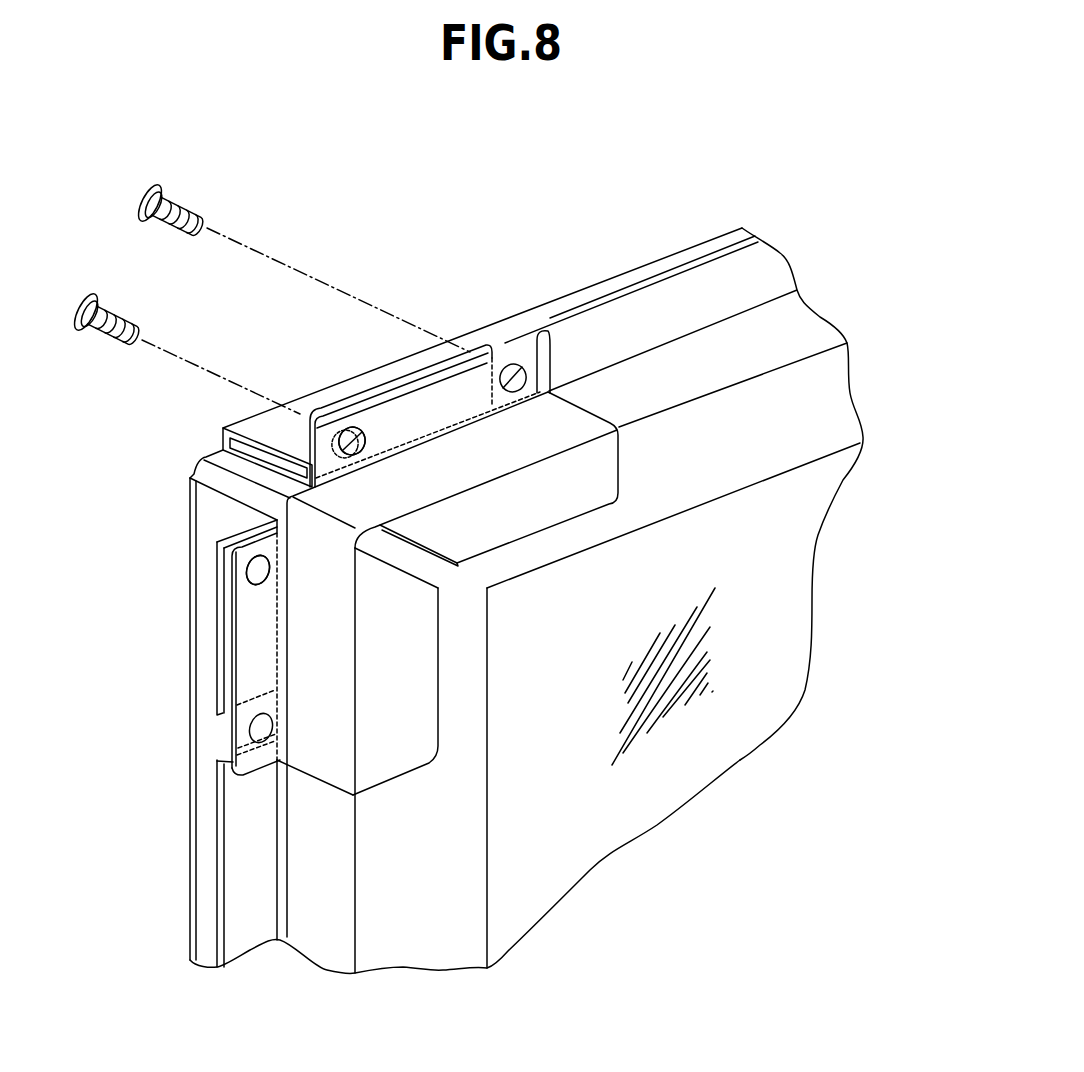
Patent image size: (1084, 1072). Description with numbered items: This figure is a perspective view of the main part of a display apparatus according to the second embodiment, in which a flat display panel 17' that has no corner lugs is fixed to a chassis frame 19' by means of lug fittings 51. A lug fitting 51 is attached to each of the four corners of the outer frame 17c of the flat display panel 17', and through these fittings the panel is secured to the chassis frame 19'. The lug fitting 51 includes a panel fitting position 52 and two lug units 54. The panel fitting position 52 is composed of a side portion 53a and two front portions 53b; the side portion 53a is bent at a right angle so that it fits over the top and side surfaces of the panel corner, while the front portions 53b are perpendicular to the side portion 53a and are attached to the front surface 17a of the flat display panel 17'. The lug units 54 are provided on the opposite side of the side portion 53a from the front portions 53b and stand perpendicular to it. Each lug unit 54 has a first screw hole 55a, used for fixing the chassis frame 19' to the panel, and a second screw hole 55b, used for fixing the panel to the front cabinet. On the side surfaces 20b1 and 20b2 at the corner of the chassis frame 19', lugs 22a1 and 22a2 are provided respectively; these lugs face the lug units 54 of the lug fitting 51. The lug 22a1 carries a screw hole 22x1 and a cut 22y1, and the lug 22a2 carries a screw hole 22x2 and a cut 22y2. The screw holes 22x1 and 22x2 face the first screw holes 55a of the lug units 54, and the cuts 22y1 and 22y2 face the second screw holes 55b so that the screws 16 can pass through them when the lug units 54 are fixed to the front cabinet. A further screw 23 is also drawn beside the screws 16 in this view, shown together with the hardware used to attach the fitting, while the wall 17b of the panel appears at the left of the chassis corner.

The screw 16 is at (180, 195).
The screw 23 is at (108, 294).
The screw hole 22x2 is at (347, 430).
The first screw hole 55a is at (348, 432).
The lug 22a2 is at (370, 389).
The lug unit 54 is at (426, 506).
The cut 22y2 is at (503, 327).
The second screw hole 55b is at (512, 365).
The side portion 53a is at (577, 430).
The chassis frame 19' is at (482, 276).
The side surface 20b2 is at (489, 327).
The outer frame 17c is at (830, 398).
The front portion 53b is at (607, 478).
The flat display panel 17' is at (713, 598).
The front surface 17a is at (755, 720).
The panel fitting position 52 is at (452, 677).
The lug fitting 51 is at (596, 603).
The side wall 17b is at (205, 473).
The screw hole 22x1 is at (250, 570).
The lug 22a1 is at (220, 623).
The cut 22y1 is at (220, 730).
The side surface 20b1 is at (291, 746).